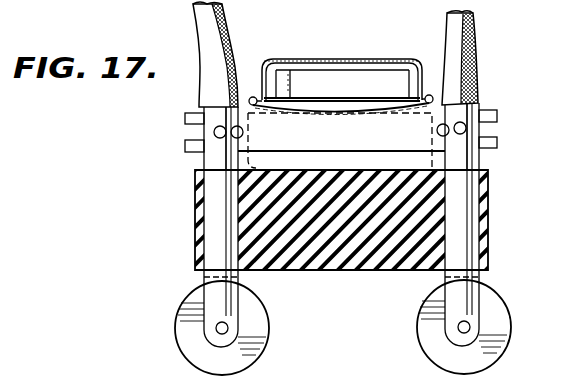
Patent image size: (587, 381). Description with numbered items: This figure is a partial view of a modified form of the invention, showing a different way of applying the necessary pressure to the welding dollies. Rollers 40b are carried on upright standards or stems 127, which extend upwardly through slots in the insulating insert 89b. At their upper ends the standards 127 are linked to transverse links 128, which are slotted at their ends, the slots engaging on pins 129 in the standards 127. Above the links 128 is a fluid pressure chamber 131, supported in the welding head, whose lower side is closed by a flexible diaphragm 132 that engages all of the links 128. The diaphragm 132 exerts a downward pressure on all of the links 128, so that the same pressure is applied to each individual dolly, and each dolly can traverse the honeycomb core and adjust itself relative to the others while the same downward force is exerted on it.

The fluid pressure chamber 131 is at (342, 58).
The flexible diaphragm 132 is at (343, 108).
The transverse link 128 is at (341, 141).
The pin 129 is at (214, 132).
The upright standard 127 is at (210, 165).
The insulating insert 89b is at (490, 228).
The roller 40b is at (259, 325).